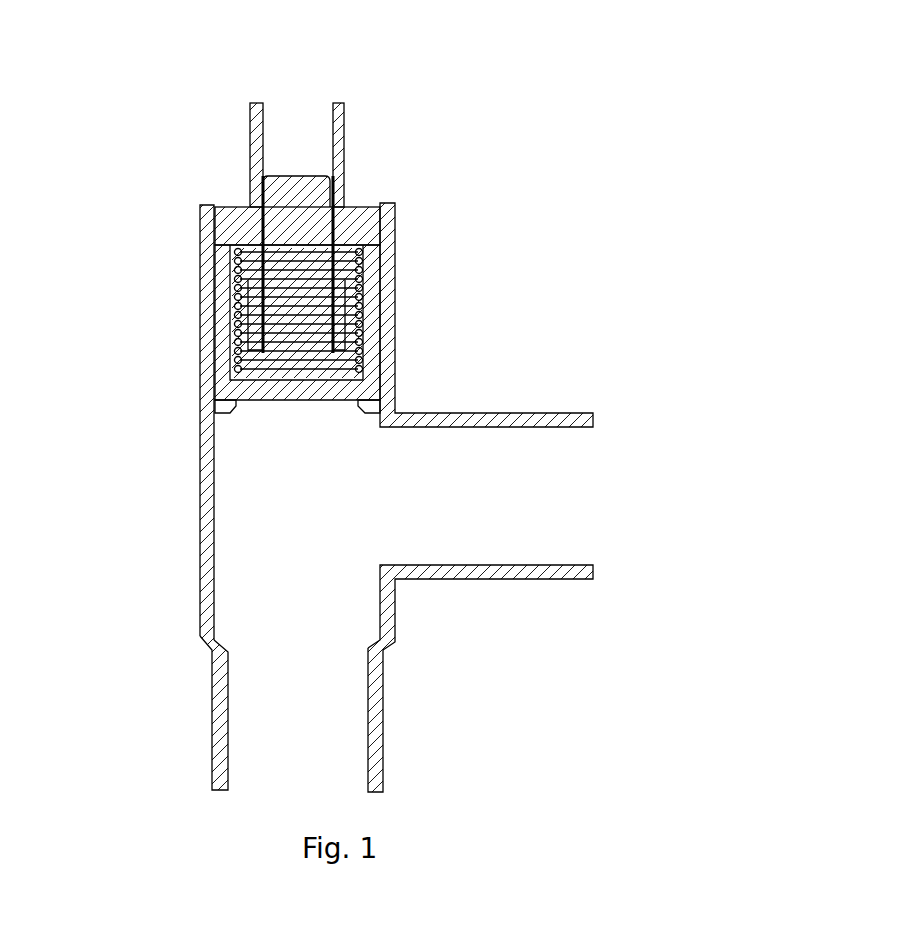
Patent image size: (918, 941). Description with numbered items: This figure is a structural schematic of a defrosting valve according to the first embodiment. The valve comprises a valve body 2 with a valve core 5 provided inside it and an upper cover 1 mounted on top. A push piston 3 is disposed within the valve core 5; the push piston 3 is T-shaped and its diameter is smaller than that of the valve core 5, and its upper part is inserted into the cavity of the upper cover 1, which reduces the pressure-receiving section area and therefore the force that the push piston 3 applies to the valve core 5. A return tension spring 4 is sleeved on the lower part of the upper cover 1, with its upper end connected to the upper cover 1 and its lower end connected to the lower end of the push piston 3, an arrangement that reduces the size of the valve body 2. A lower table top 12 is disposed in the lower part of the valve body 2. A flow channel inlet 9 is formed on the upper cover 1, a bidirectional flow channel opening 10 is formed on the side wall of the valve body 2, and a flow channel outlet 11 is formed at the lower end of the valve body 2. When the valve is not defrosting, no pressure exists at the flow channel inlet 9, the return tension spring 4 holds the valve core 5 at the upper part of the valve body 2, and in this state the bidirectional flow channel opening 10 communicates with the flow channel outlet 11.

The upper cover 1 is at (345, 205).
The valve body 2 is at (395, 283).
The push piston 3 is at (297, 223).
The return tension spring 4 is at (213, 313).
The valve core 5 is at (215, 397).
The flow channel inlet 9 is at (302, 153).
The bidirectional flow channel opening 10 is at (470, 497).
The flow channel outlet 11 is at (333, 743).
The lower table top 12 is at (223, 645).